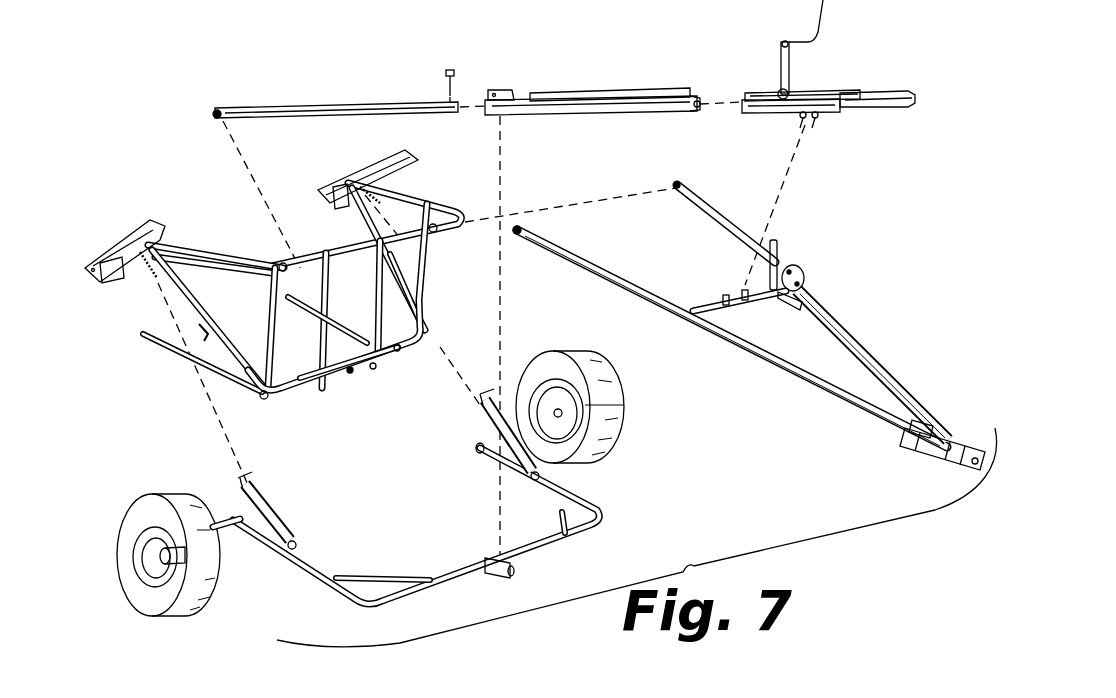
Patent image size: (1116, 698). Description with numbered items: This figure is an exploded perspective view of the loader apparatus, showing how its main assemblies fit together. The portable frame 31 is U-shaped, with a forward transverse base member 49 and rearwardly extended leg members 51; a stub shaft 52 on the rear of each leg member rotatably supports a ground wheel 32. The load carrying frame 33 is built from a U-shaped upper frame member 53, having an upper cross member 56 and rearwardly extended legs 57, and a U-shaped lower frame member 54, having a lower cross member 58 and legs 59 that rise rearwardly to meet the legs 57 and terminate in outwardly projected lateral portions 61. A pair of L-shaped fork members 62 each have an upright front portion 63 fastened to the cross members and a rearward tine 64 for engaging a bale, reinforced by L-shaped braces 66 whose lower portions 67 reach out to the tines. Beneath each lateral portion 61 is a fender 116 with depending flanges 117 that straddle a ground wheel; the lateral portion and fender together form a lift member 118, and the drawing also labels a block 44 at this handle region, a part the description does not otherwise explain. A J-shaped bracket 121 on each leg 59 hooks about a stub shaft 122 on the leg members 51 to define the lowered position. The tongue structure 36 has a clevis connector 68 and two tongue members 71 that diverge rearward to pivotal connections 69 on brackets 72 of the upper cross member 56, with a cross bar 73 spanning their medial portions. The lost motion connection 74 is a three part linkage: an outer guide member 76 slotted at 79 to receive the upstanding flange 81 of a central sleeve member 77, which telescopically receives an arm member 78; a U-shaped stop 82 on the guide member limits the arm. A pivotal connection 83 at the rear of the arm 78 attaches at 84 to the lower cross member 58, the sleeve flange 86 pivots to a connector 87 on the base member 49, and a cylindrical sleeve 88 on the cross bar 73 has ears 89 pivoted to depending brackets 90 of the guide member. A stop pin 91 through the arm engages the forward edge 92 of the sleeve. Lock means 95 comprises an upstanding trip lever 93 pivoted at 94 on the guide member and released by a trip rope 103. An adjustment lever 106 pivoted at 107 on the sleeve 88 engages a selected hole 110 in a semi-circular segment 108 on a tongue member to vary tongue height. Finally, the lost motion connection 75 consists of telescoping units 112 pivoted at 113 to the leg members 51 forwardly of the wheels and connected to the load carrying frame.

The portable frame 31 is at (411, 513).
The ground wheel 32 is at (612, 430).
The load carrying frame 33 is at (325, 201).
The tongue structure 36 is at (749, 340).
The handle bracket 44 is at (255, 220).
The forward transverse base member 49 is at (410, 580).
The leg member 51 is at (318, 578).
The stub shaft 52 is at (227, 522).
The upper frame member 53 is at (458, 215).
The lower frame member 54 is at (430, 335).
The upper cross member 56 is at (337, 243).
The leg of upper frame member 57 is at (205, 255).
The lower cross member 58 is at (330, 370).
The leg of lower frame member 59 is at (183, 300).
The lateral portion 61 is at (340, 190).
The fork member 62 is at (197, 377).
The front portion 63 is at (272, 320).
The tine portion 64 is at (203, 353).
The brace 66 is at (351, 373).
The lower portion of brace 67 is at (265, 400).
The clevis connector 68 is at (950, 458).
The pivotal connection 69 is at (275, 272).
The tongue member 71 is at (860, 325).
The bracket 72 is at (280, 264).
The cross bar 73 is at (795, 302).
The lost motion connection 74 is at (862, 123).
The lost motion connection 75 is at (282, 497).
The outer guide member 76 is at (830, 93).
The central sleeve member 77 is at (618, 115).
The arm member 78 is at (380, 105).
The slot 79 is at (742, 104).
The flange 81 is at (632, 92).
The stop 82 is at (905, 93).
The pivotal connection 83 is at (225, 107).
The pivotal connection point 84 is at (360, 366).
The flange 86 is at (505, 90).
The connector 87 is at (515, 572).
The cylindrical sleeve 88 is at (695, 312).
The ear 89 is at (745, 291).
The depending bracket 90 is at (805, 120).
The stop pin 91 is at (452, 70).
The forward edge 92 is at (698, 112).
The trip lever 93 is at (784, 55).
The pivot 94 is at (780, 92).
The lock means 95 is at (815, 63).
The trip rope 103 is at (818, 30).
The lever 106 is at (775, 242).
The pivot 107 is at (797, 282).
The segment 108 is at (792, 272).
The adjustment hole 110 is at (800, 285).
The telescoping unit 112 is at (275, 510).
The pivotal connection 113 is at (296, 544).
The fender 116 is at (148, 235).
The depending flange 117 is at (118, 250).
The lift member 118 is at (147, 250).
The J-shaped bracket 121 is at (148, 336).
The stub shaft 122 is at (268, 532).